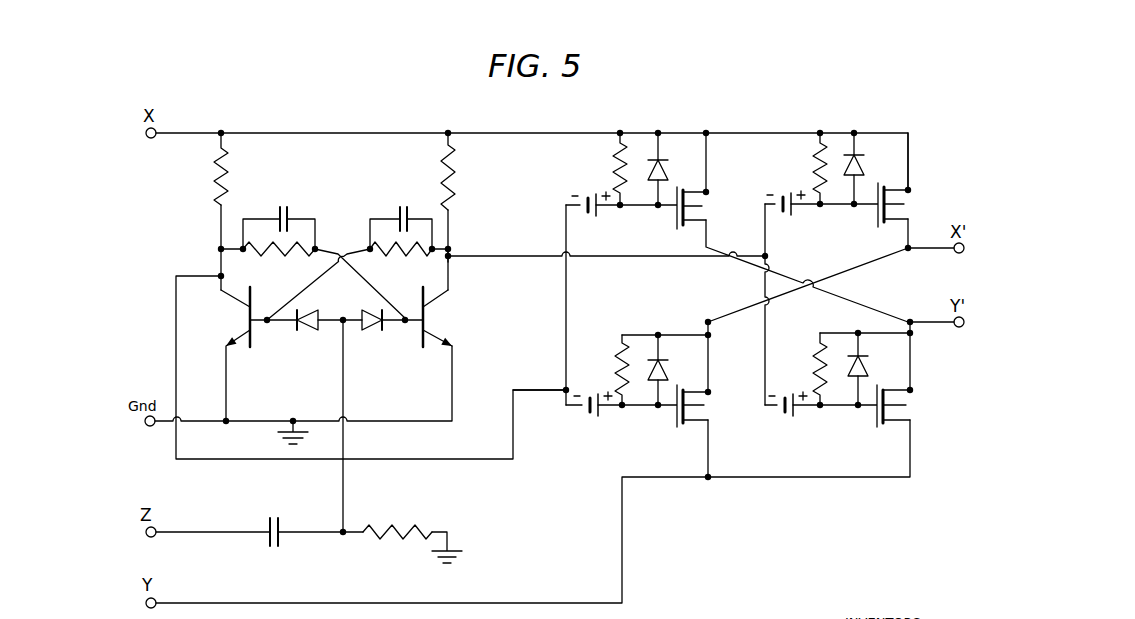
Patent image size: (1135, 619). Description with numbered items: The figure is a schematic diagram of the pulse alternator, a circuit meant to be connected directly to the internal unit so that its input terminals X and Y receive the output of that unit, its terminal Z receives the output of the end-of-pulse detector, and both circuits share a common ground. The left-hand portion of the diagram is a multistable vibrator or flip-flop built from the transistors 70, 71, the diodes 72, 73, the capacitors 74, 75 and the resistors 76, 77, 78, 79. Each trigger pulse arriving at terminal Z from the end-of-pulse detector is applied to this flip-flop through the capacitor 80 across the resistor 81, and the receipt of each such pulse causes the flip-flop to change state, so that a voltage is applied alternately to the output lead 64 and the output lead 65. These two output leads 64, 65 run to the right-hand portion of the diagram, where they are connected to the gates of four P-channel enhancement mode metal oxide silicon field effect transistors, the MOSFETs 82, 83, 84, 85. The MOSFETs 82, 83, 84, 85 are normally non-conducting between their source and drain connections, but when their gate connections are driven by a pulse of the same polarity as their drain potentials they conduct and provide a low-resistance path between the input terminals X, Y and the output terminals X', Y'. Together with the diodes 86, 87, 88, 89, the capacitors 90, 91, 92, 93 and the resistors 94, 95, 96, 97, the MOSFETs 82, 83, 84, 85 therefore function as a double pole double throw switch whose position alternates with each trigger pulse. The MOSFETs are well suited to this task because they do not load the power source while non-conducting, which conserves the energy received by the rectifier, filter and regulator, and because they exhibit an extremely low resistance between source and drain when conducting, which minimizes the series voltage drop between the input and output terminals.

The output lead 64 is at (512, 262).
The output lead 65 is at (527, 392).
The transistor 70 is at (248, 316).
The transistor 71 is at (430, 316).
The diode 72 is at (308, 335).
The diode 73 is at (372, 335).
The capacitor 74 is at (283, 206).
The capacitor 75 is at (403, 206).
The resistor 76 is at (285, 258).
The resistor 77 is at (407, 258).
The resistor 78 is at (211, 163).
The resistor 79 is at (456, 166).
The capacitor 80 is at (274, 516).
The resistor 81 is at (399, 526).
The P-channel enhancement mode MOSFET 82 is at (680, 424).
The P-channel enhancement mode MOSFET 83 is at (678, 226).
The P-channel enhancement mode MOSFET 84 is at (879, 225).
The P-channel enhancement mode MOSFET 85 is at (878, 423).
The diode 86 is at (665, 377).
The diode 87 is at (665, 176).
The diode 88 is at (860, 174).
The diode 89 is at (864, 376).
The capacitor 90 is at (586, 418).
The capacitor 91 is at (590, 219).
The capacitor 92 is at (785, 218).
The capacitor 93 is at (787, 418).
The resistor 94 is at (616, 365).
The resistor 95 is at (613, 168).
The resistor 96 is at (813, 168).
The resistor 97 is at (815, 365).